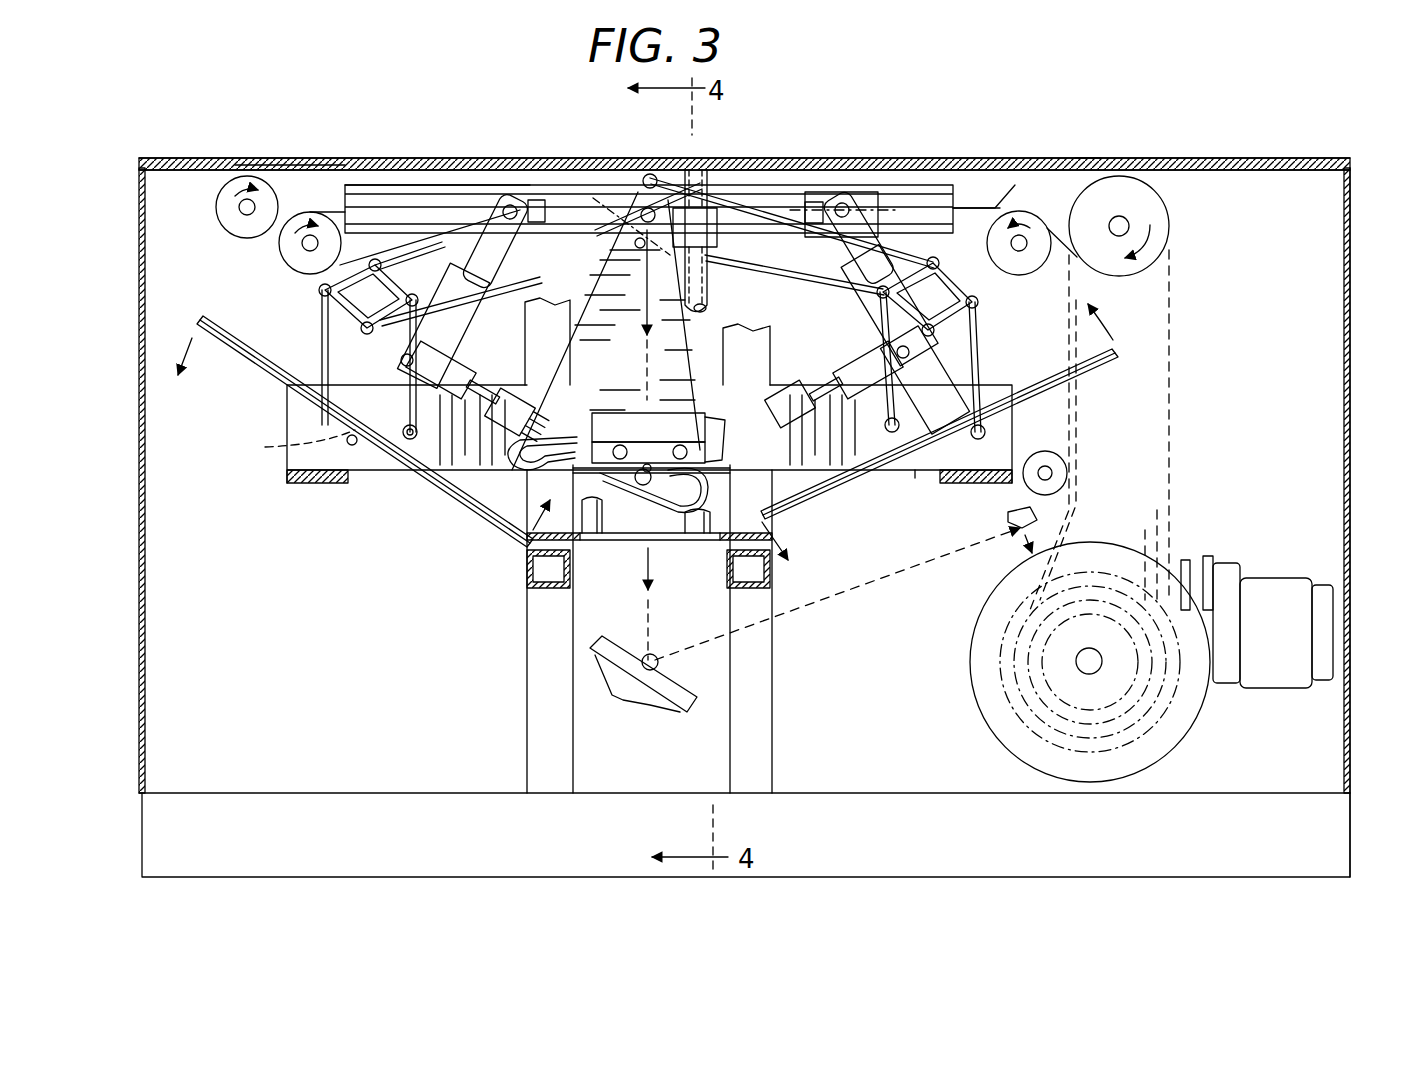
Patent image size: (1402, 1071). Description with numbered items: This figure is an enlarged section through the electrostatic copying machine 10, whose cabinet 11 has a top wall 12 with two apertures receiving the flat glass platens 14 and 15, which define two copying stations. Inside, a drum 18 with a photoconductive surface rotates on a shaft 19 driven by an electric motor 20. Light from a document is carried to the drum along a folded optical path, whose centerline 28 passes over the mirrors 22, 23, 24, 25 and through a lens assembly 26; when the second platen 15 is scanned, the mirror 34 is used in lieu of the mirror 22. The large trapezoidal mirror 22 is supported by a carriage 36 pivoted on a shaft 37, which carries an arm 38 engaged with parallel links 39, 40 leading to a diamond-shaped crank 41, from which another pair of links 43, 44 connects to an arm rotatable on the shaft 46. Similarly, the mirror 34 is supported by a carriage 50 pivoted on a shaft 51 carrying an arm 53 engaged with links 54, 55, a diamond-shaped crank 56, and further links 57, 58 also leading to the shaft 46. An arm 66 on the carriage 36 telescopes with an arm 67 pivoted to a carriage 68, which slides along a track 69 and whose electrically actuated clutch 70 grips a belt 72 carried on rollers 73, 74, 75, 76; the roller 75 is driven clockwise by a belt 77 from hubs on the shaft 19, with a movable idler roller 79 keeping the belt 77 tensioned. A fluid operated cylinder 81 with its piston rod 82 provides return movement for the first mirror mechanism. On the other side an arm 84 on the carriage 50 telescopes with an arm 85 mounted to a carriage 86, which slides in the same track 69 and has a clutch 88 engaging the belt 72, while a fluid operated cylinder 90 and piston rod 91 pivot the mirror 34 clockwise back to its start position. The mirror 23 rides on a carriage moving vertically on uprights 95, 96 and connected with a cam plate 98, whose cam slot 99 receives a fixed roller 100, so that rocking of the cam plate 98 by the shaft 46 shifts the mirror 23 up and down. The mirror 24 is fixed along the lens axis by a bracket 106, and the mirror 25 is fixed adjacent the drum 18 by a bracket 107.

The electrostatic copying machine 10 is at (1100, 145).
The cabinet 11 is at (1352, 222).
The top wall 12 is at (1190, 158).
The platen 14 is at (370, 158).
The platen 15 is at (962, 170).
The drum 18 is at (975, 612).
The shaft 19 is at (1095, 630).
The electric motor 20 is at (1285, 636).
The mirror 22 is at (246, 322).
The mirror 23 is at (600, 237).
The mirror 24 is at (625, 650).
The mirror 25 is at (1013, 532).
The lens assembly 26 is at (600, 410).
The centerline of the folded optical path 28 is at (1020, 700).
The mirror 34 is at (1050, 372).
The carriage 36 is at (398, 472).
The shaft 37 is at (295, 446).
The arm 38 is at (415, 436).
The link 39 is at (320, 338).
The link 40 is at (446, 338).
The diamond-shaped crank 41 is at (335, 275).
The link 43 is at (382, 288).
The link 44 is at (461, 304).
The shaft 46 is at (640, 188).
The carriage 50 is at (1060, 390).
The shaft 51 is at (920, 474).
The arm 53 is at (888, 418).
The link 54 is at (862, 323).
The link 55 is at (980, 328).
The diamond-shaped crank 56 is at (945, 272).
The link 57 is at (735, 228).
The link 58 is at (770, 285).
The arm 66 is at (400, 350).
The arm 67 is at (497, 255).
The carriage 68 is at (483, 195).
The track 69 is at (920, 185).
The clutch 70 is at (537, 200).
The belt 72 is at (968, 212).
The roller 73 is at (230, 203).
The roller 74 is at (288, 250).
The roller 75 is at (1155, 210).
The roller 76 is at (1045, 262).
The belt 77 is at (1172, 378).
The idler roller 79 is at (1048, 455).
The fluid operated cylinder 81 is at (520, 380).
The piston rod 82 is at (490, 400).
The arm 84 is at (930, 375).
The arm 85 is at (850, 255).
The carriage 86 is at (845, 192).
The clutch 88 is at (810, 200).
The fluid operated cylinder 90 is at (775, 425).
The piston rod 91 is at (830, 372).
The upright 95 is at (592, 530).
The upright 96 is at (697, 528).
The cam plate 98 is at (618, 358).
The cam slot 99 is at (515, 448).
The roller 100 is at (640, 490).
The bracket 106 is at (635, 705).
The bracket 107 is at (1006, 515).